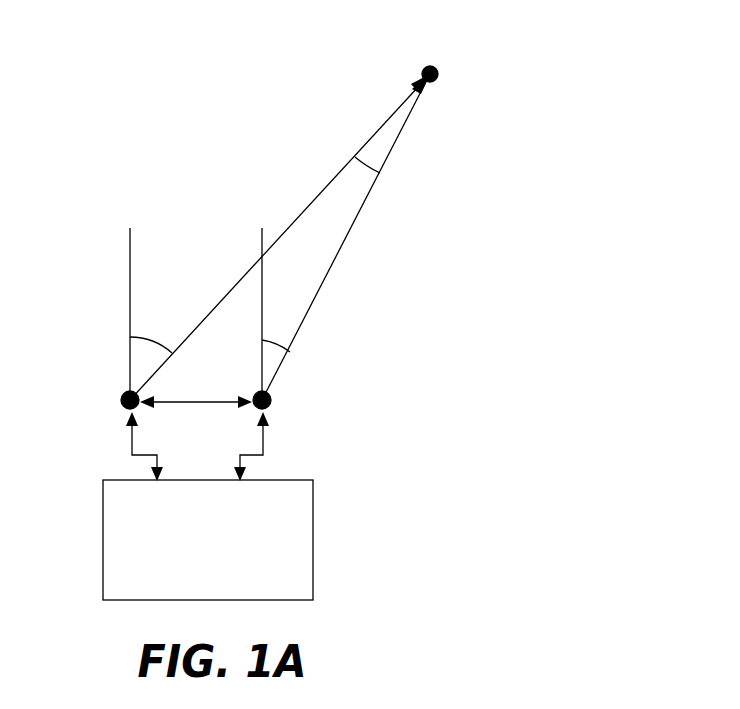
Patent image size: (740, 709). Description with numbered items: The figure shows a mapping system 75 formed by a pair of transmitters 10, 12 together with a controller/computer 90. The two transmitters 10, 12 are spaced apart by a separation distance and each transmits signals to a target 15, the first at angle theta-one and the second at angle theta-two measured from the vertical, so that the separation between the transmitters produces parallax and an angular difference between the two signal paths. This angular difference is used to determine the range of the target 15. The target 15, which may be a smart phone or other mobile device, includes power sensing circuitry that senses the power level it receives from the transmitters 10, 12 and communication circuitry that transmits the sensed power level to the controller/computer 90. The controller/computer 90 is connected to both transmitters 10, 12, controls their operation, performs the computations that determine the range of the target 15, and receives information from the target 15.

The transmitter 10 is at (122, 394).
The transmitter 12 is at (271, 396).
The target 15 is at (433, 63).
The mapping system 75 is at (580, 117).
The controller/computer 90 is at (313, 527).